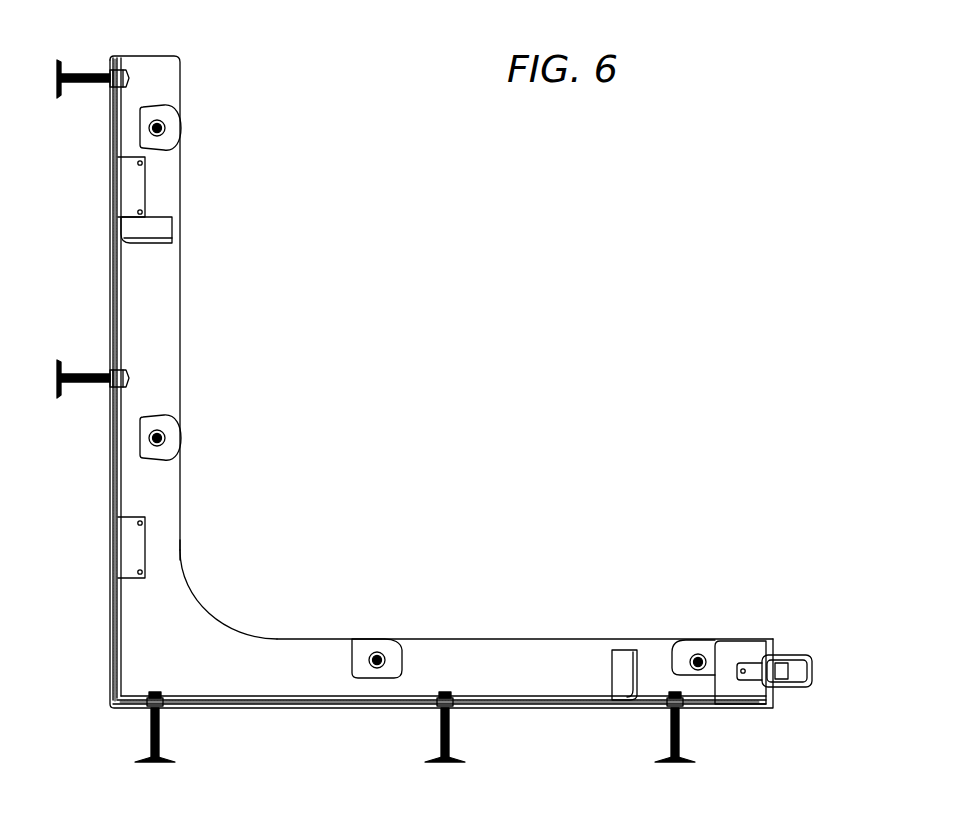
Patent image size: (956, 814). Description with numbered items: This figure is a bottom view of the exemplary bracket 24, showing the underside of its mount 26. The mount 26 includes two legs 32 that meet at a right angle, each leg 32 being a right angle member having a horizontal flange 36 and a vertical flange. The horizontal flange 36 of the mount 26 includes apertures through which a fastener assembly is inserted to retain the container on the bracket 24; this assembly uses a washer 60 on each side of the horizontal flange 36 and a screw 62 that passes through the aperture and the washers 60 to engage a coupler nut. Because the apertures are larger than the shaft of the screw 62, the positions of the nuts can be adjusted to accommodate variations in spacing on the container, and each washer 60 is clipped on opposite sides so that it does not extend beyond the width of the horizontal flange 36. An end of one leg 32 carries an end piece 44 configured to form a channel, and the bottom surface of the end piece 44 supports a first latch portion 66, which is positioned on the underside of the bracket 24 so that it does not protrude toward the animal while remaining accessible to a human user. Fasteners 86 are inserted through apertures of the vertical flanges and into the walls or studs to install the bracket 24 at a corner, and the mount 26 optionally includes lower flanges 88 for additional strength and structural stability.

The bracket 24 is at (427, 410).
The mount 26 is at (187, 553).
The leg 32 is at (167, 318).
The horizontal flange 36 is at (212, 647).
The end piece 44 is at (745, 698).
The washer 60 is at (168, 117).
The screw 62 is at (163, 130).
The first latch portion 66 is at (801, 655).
The fastener 86 is at (83, 85).
The lower flange 88 is at (170, 240).